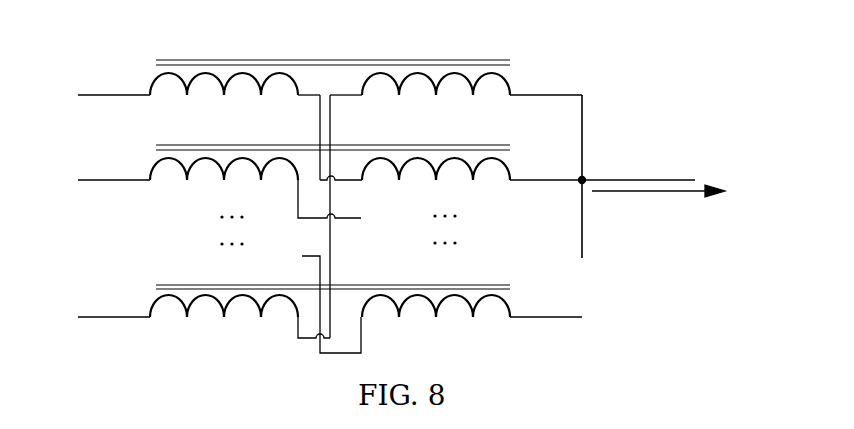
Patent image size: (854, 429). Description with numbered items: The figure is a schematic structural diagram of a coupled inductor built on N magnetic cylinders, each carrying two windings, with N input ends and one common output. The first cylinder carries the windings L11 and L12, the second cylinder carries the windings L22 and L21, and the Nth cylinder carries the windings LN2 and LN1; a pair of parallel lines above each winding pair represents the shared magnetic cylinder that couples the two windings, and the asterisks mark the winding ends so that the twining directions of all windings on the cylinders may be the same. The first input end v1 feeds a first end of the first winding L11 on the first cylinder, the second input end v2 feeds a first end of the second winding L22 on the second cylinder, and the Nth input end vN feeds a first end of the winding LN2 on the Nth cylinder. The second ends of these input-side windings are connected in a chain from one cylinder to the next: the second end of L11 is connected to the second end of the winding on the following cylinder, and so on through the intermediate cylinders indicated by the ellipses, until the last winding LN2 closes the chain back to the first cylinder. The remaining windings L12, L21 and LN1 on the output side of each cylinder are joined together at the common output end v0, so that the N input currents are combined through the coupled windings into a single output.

The first input end v1 is at (114, 81).
The second input end v2 is at (114, 166).
The Nth input end vN is at (114, 305).
The output end v0 is at (617, 175).
The first winding on the first cylinder L11 is at (224, 64).
The second winding on the first cylinder L12 is at (445, 65).
The second winding on the second cylinder L22 is at (224, 149).
The first winding on the second cylinder L21 is at (445, 150).
The second winding on the Nth cylinder LN2 is at (224, 288).
The first winding on the Nth cylinder LN1 is at (445, 289).